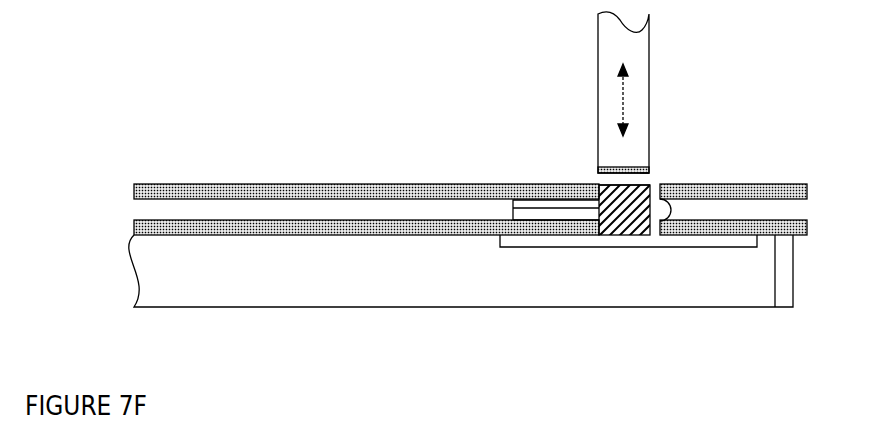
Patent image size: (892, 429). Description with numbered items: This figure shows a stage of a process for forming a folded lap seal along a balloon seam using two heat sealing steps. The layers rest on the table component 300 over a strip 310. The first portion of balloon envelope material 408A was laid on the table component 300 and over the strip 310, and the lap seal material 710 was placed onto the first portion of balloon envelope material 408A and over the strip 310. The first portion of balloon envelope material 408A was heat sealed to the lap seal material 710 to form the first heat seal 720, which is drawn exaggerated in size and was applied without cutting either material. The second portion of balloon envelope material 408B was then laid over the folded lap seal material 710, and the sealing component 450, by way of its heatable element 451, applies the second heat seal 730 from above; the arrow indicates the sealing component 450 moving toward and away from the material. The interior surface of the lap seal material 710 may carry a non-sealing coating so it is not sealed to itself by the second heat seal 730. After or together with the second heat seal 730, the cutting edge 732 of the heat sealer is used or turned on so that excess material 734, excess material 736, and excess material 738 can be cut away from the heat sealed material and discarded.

The table component 300 is at (472, 308).
The strip 310 is at (548, 247).
The first portion of balloon envelope material 408A is at (158, 220).
The second portion of balloon envelope material 408B is at (470, 157).
The sealing component 450 is at (597, 133).
The heatable element 451 is at (597, 168).
The lap seal material 710 is at (513, 212).
The first heat seal 720 is at (632, 235).
The second heat seal 730 is at (598, 186).
The cutting edge 732 is at (650, 170).
The excess material 734 is at (733, 185).
The excess material 736 is at (671, 219).
The excess material 738 is at (775, 307).